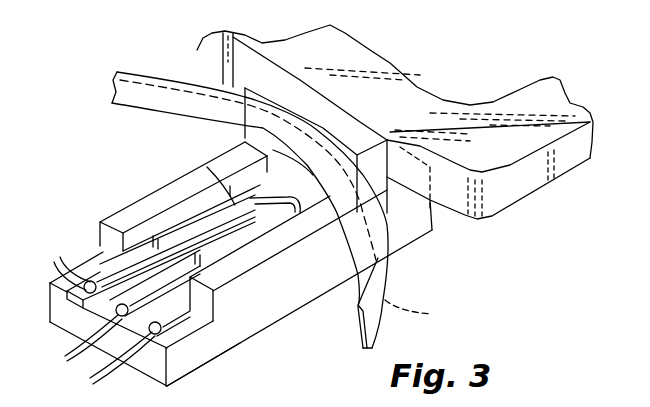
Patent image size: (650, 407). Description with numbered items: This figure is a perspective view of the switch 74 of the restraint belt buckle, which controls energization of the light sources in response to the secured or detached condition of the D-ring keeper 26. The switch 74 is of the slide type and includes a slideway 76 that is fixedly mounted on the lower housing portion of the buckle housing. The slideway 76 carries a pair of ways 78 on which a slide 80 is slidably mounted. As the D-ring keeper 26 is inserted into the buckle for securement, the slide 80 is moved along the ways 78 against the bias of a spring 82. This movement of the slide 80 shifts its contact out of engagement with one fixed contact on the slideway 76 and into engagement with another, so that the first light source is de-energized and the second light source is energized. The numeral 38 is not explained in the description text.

The D-ring keeper 26 is at (508, 190).
The conductors / wires 38 is at (167, 332).
The switch 74 is at (418, 258).
The slideway 76 is at (225, 348).
The ways 78 is at (207, 167).
The slide 80 is at (245, 88).
The spring 82 is at (424, 316).